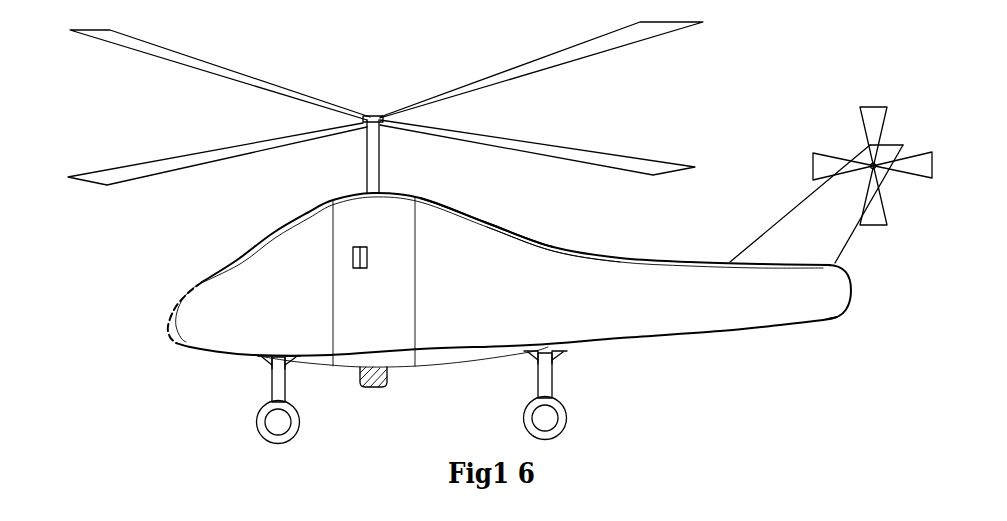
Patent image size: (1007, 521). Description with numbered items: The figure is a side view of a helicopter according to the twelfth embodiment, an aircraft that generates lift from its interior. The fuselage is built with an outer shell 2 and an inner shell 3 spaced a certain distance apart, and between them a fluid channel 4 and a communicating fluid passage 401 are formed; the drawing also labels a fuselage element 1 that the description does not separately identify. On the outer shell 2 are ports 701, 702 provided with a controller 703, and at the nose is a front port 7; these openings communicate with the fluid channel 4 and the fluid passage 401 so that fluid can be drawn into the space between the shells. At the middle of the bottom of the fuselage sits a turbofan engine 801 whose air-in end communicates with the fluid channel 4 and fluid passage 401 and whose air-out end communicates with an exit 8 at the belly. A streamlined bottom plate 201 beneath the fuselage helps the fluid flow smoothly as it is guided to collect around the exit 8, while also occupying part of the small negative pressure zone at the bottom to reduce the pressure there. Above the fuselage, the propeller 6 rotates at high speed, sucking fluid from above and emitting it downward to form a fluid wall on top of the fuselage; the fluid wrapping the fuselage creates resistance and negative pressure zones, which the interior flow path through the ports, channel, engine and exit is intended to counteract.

The inner fuselage shell 1 is at (480, 242).
The outer shell 2 is at (483, 237).
The inner shell 3 is at (192, 279).
The fluid channel 4 is at (513, 286).
The propeller 6 is at (385, 106).
The front port 7 is at (169, 312).
The exit 8 is at (357, 387).
The streamlined bottom plate 201 is at (400, 377).
The fluid passage 401 is at (417, 268).
The port 701 is at (553, 216).
The port 702 is at (310, 220).
The controller 703 is at (405, 200).
The turbofan engine 801 is at (405, 387).